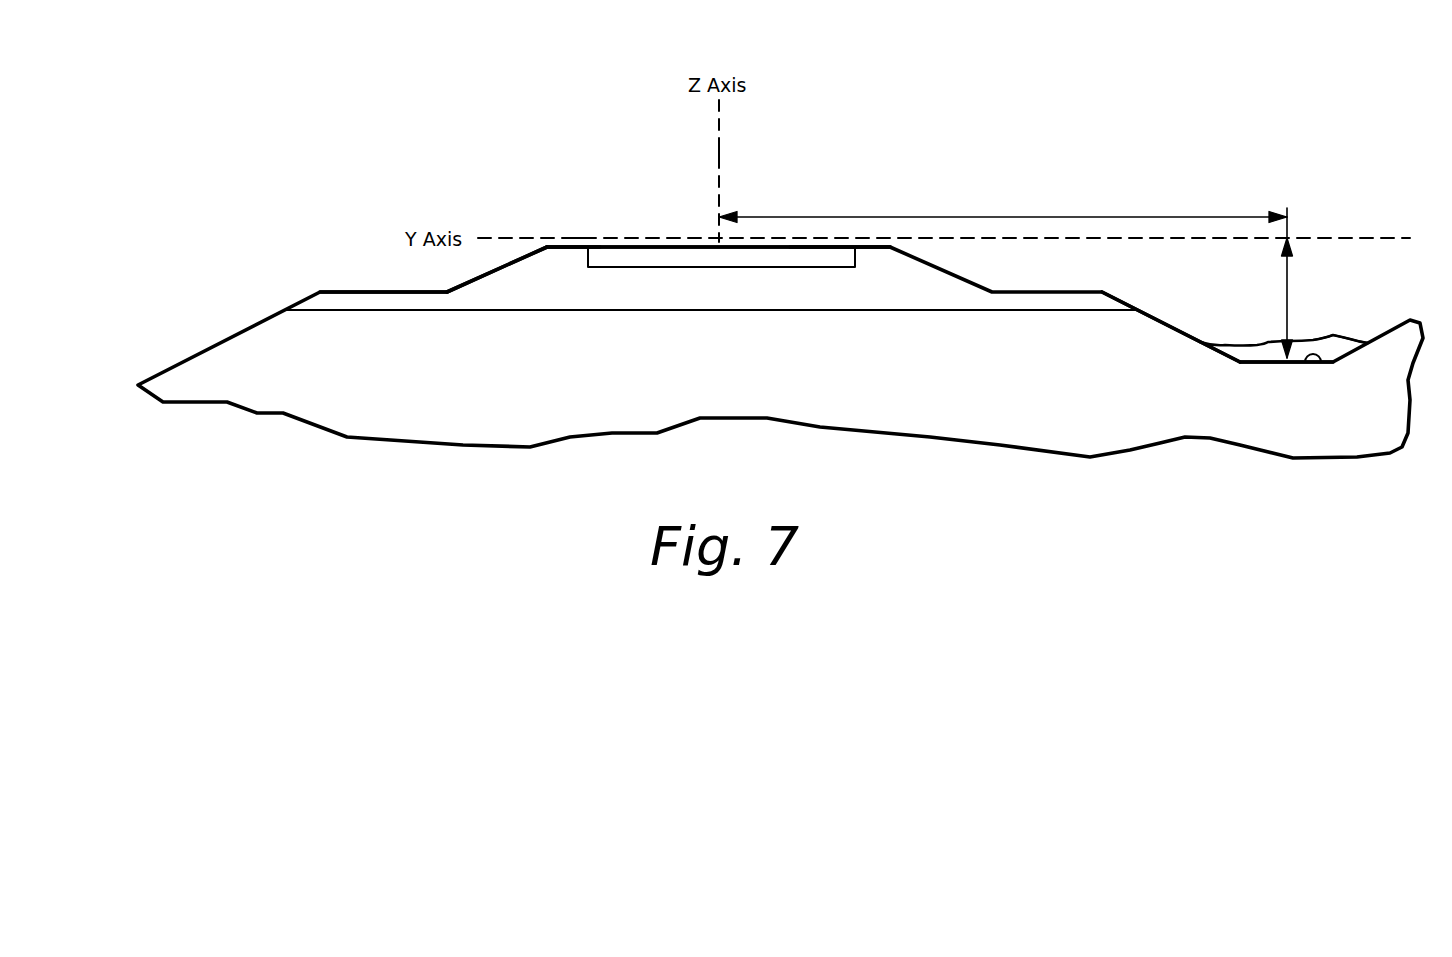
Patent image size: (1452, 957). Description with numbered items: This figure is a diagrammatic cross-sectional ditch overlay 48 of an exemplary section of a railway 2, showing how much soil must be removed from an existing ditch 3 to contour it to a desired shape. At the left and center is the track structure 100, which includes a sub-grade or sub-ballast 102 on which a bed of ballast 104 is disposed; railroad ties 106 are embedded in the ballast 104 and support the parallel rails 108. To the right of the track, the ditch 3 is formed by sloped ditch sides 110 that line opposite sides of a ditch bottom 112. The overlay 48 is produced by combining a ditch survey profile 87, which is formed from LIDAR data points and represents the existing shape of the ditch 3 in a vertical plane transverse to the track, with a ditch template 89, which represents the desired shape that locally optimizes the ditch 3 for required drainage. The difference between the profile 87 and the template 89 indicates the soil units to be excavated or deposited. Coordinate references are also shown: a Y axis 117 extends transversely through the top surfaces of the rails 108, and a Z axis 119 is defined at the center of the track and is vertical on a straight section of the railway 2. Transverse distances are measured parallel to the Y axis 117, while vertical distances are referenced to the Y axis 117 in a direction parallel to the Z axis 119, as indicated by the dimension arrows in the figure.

The railway 2 is at (592, 120).
The ditch 3 is at (1324, 208).
The ditch overlay 48 is at (1096, 124).
The ditch survey profile 87 is at (1333, 335).
The ditch template 89 is at (1323, 360).
The track structure 100 is at (452, 175).
The sub-grade or sub-ballast 102 is at (332, 297).
The ballast 104 is at (525, 280).
The railroad ties 106 is at (726, 260).
The rails 108 is at (645, 243).
The sloped ditch sides 110 is at (1163, 327).
The ditch bottom 112 is at (1265, 362).
The Y axis 117 is at (581, 237).
The Z axis 119 is at (720, 153).